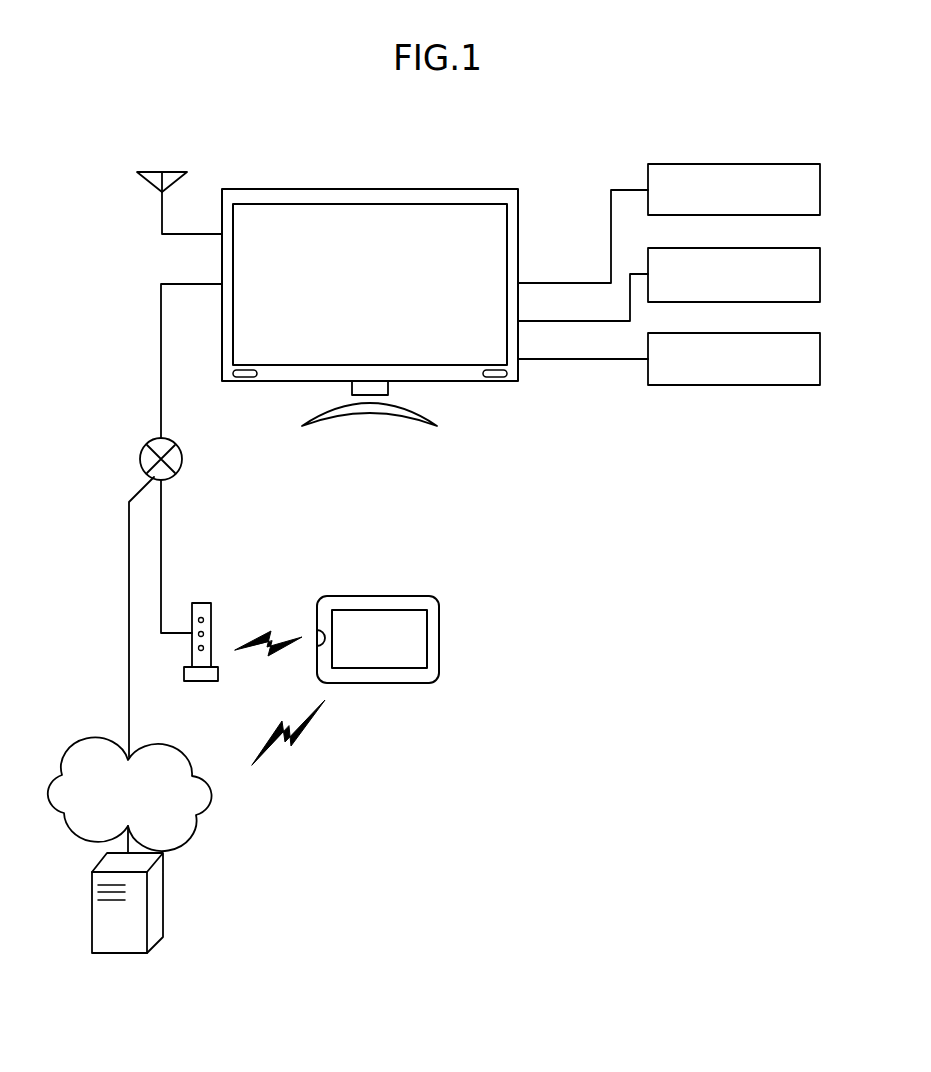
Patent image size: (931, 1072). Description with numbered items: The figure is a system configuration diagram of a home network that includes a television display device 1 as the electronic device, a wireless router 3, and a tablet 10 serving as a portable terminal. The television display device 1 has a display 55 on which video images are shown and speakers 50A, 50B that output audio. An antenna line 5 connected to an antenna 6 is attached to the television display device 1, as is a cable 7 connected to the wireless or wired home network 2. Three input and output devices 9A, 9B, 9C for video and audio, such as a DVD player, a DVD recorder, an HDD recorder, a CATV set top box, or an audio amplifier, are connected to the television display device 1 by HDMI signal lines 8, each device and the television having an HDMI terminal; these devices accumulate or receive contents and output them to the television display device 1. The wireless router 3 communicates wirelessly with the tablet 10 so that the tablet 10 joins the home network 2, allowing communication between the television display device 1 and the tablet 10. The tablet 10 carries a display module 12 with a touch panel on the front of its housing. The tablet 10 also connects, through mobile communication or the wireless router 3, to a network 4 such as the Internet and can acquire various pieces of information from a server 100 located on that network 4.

The television display device 1 is at (487, 187).
The home network 2 is at (140, 456).
The wireless router 3 is at (203, 682).
The network 4 is at (214, 793).
The antenna line 5 is at (160, 216).
The antenna 6 is at (170, 172).
The cable 7 is at (160, 313).
The HDMI signal line 8 is at (631, 188).
The input and output device 9A is at (778, 164).
The input and output device 9B is at (778, 248).
The input and output device 9C is at (778, 333).
The tablet 10 is at (374, 595).
The display module 12 is at (378, 658).
The speaker 50A is at (245, 378).
The speaker 50B is at (495, 378).
The display 55 is at (372, 215).
The server 100 is at (165, 895).